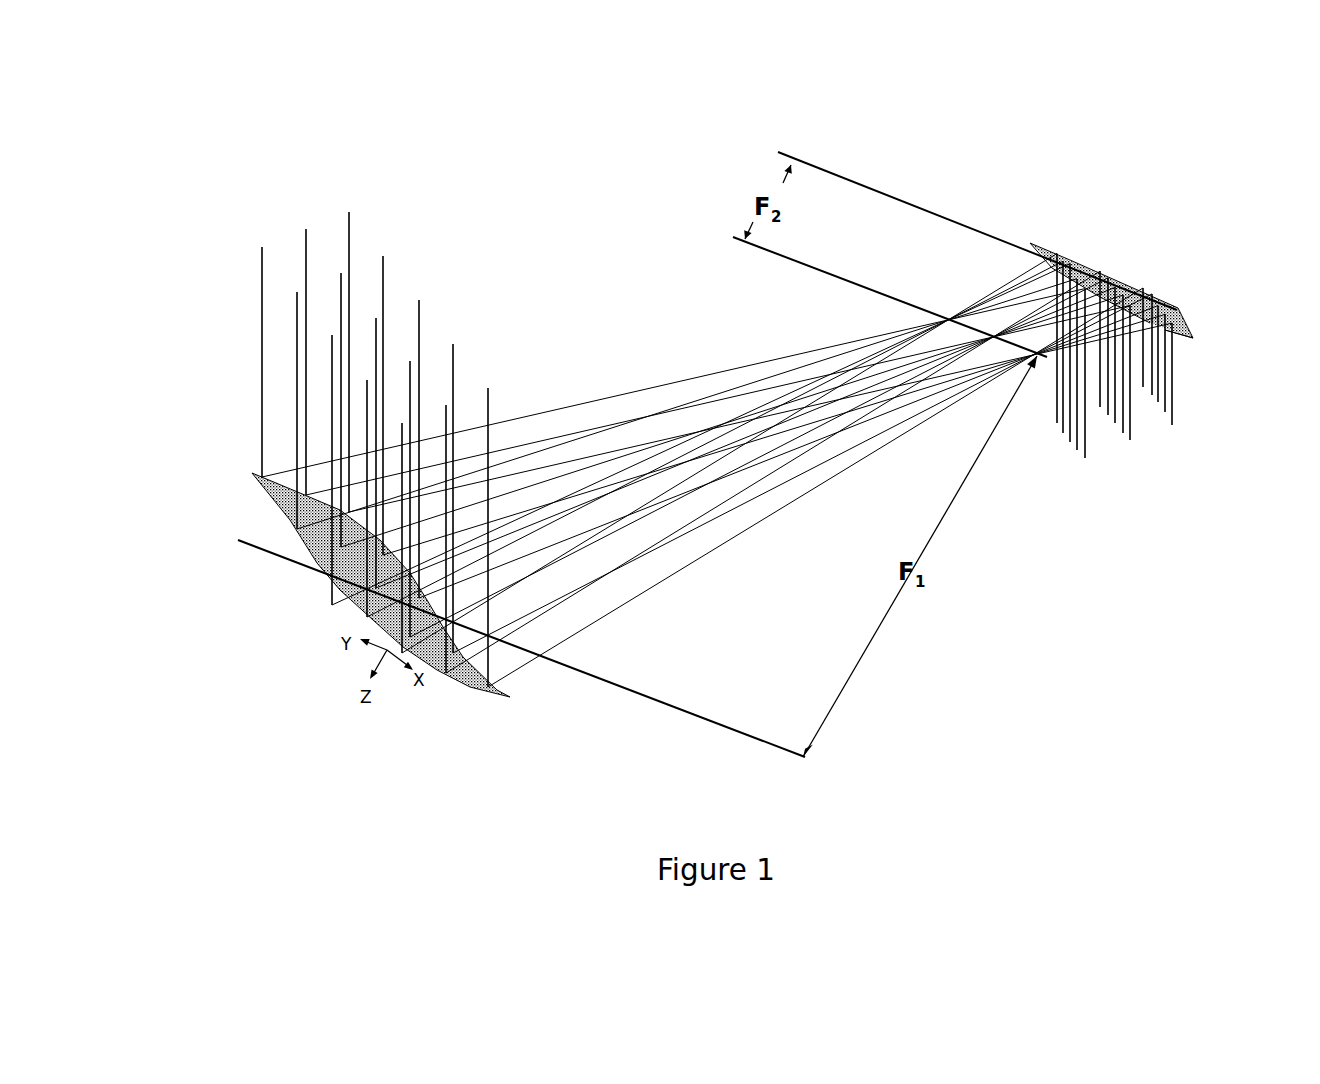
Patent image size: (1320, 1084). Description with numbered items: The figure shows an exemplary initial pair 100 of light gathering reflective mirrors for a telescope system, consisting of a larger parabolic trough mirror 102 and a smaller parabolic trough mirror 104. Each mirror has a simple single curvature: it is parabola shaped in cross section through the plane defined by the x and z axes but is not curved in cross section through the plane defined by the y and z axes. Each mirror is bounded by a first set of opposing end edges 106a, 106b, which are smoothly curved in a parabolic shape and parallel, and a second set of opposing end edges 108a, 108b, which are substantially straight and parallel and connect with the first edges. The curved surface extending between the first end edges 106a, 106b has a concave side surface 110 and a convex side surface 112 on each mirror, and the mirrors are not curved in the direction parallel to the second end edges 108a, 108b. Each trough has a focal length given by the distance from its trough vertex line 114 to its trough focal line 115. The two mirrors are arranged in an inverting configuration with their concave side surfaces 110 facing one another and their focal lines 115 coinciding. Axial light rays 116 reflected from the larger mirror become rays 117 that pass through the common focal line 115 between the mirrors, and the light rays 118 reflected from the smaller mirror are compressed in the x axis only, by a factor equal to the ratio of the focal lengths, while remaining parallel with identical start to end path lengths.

The initial pair of light gathering reflective mirrors 100 is at (640, 108).
The parabolic trough mirror 102 is at (331, 611).
The parabolic trough mirror 104 is at (1111, 225).
The first end edge 106a is at (278, 537).
The first end edge 106b is at (519, 683).
The second end edge 108a is at (479, 693).
The second end edge 108b is at (1240, 372).
The concave side surface 110 is at (331, 551).
The convex side surface 112 is at (1107, 275).
The trough vertex line 114 is at (277, 563).
The trough focal line 115 is at (866, 294).
The axial light rays 116 is at (392, 270).
The reflected rays 117 is at (601, 386).
The reflected light rays 118 is at (1133, 432).